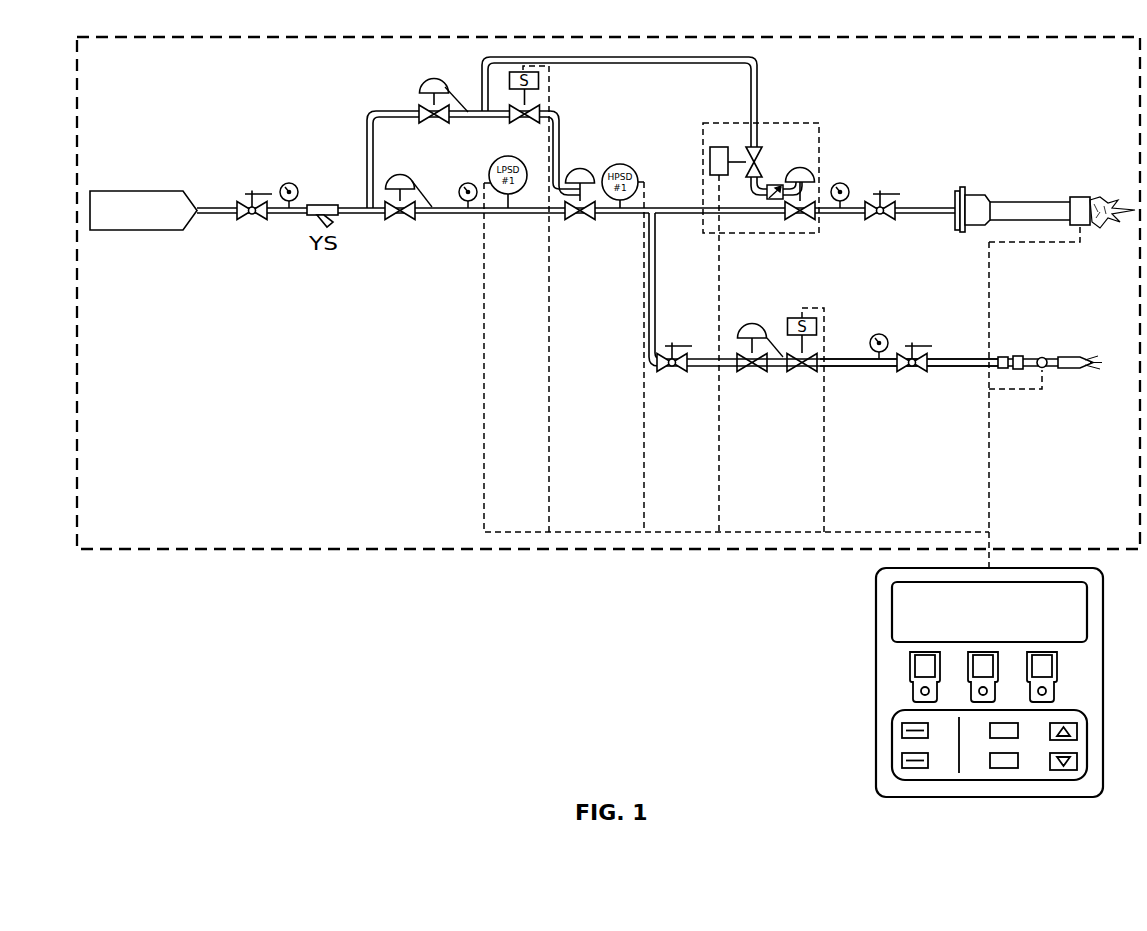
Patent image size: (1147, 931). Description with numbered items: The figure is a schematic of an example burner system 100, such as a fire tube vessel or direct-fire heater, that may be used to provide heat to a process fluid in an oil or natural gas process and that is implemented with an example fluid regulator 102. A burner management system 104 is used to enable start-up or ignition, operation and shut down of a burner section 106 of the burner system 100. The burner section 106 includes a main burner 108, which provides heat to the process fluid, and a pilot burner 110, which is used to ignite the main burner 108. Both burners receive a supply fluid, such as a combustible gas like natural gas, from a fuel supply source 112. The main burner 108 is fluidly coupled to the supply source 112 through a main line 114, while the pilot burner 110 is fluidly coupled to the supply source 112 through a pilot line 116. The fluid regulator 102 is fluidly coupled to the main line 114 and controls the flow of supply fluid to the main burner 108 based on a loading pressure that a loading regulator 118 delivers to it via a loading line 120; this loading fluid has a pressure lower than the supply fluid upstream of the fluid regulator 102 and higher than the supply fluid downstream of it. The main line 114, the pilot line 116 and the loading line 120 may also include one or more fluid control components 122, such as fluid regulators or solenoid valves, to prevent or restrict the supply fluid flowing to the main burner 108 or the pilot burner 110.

The burner system 100 is at (125, 37).
The fluid regulator 102 is at (800, 123).
The burner management system 104 is at (875, 683).
The burner section 106 is at (170, 81).
The main burner 108 is at (1035, 200).
The pilot burner 110 is at (1028, 354).
The fuel supply source 112 is at (137, 190).
The main line 114 is at (693, 217).
The pilot line 116 is at (867, 368).
The loading regulator 118 is at (435, 78).
The loading line 120 is at (692, 56).
The fluid control components 122 is at (407, 176).